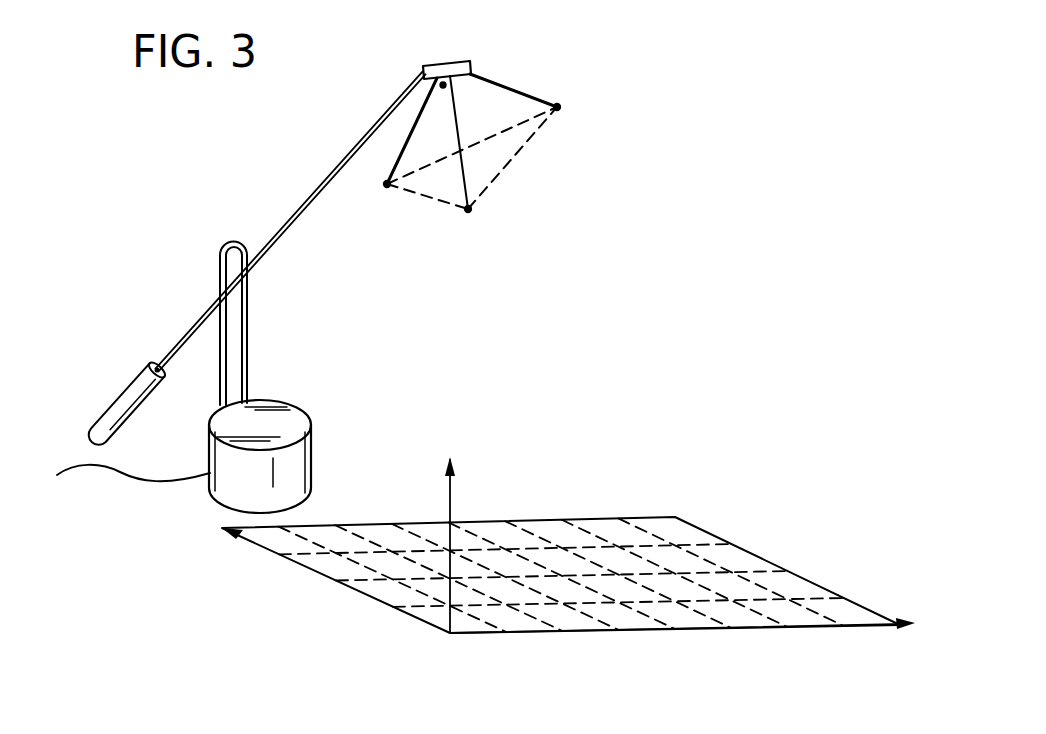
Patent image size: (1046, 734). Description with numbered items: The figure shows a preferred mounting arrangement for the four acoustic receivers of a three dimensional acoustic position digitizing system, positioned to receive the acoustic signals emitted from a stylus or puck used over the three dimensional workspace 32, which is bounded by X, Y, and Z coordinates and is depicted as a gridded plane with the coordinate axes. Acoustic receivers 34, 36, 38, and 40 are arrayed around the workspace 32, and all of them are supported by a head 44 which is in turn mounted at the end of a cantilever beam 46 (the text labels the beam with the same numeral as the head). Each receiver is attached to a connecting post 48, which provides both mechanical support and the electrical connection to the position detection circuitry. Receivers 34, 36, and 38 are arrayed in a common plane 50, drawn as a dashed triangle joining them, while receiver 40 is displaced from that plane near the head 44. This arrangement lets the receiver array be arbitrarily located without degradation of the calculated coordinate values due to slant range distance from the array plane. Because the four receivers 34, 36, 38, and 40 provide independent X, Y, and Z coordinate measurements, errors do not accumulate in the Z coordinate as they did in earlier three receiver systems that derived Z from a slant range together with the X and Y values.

The workspace 32 is at (665, 464).
The acoustic receiver 34 is at (387, 184).
The acoustic receiver 36 is at (557, 107).
The acoustic receiver 38 is at (468, 209).
The acoustic receiver 40 is at (440, 86).
The head 44 is at (452, 60).
The probe rod 46 is at (297, 205).
The connecting post 48 is at (404, 144).
The plane 50 is at (497, 150).